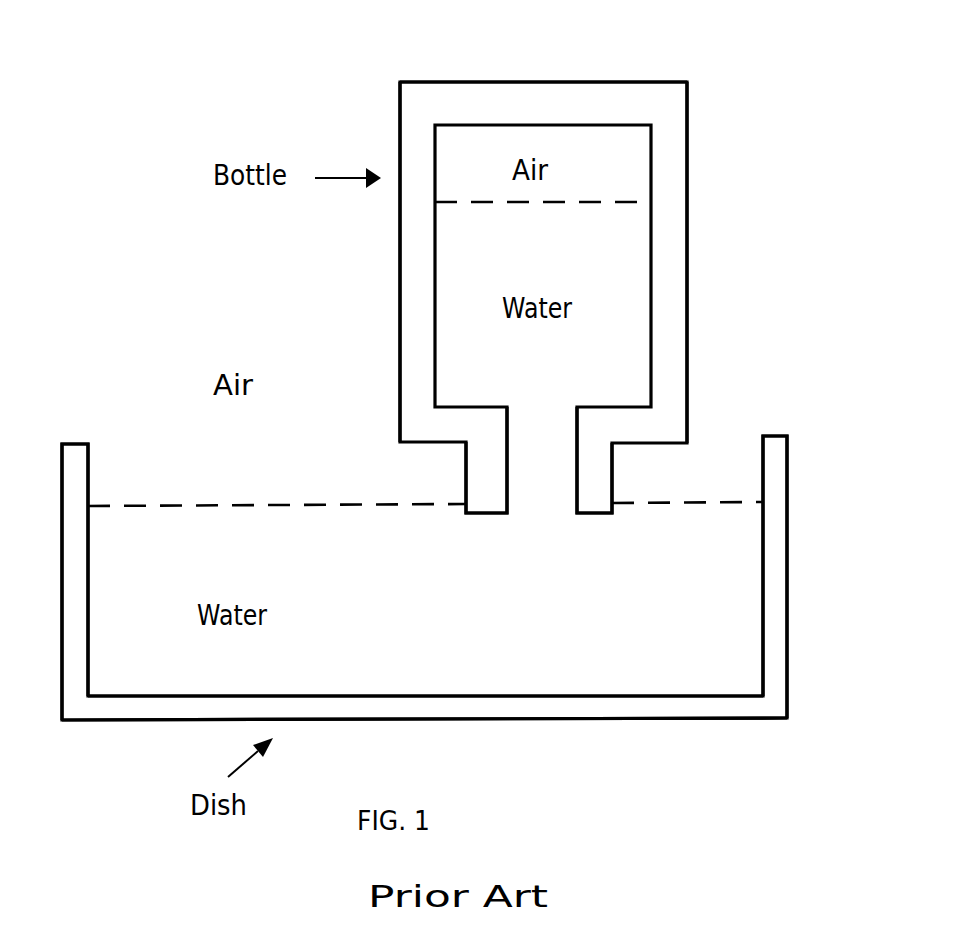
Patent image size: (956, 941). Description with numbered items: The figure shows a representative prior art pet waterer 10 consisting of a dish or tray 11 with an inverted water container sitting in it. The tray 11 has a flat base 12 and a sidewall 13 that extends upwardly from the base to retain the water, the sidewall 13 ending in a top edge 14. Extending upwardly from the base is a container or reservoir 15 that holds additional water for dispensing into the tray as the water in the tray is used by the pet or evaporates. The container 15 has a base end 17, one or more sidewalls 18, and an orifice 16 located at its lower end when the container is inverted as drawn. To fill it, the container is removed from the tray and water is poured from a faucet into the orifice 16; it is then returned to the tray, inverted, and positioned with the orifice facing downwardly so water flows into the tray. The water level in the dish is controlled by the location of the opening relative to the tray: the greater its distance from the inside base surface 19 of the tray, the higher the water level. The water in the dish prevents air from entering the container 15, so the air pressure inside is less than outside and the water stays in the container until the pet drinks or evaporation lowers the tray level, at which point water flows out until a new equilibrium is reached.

The pet waterer 10 is at (738, 352).
The dish or tray 11 is at (103, 720).
The flat base 12 is at (642, 718).
The sidewall 13 is at (787, 627).
The top edge 14 is at (72, 442).
The container or reservoir 15 is at (400, 105).
The orifice 16 is at (537, 492).
The base end 17 is at (543, 82).
The sidewalls 18 is at (687, 187).
The inside base surface 19 is at (398, 692).